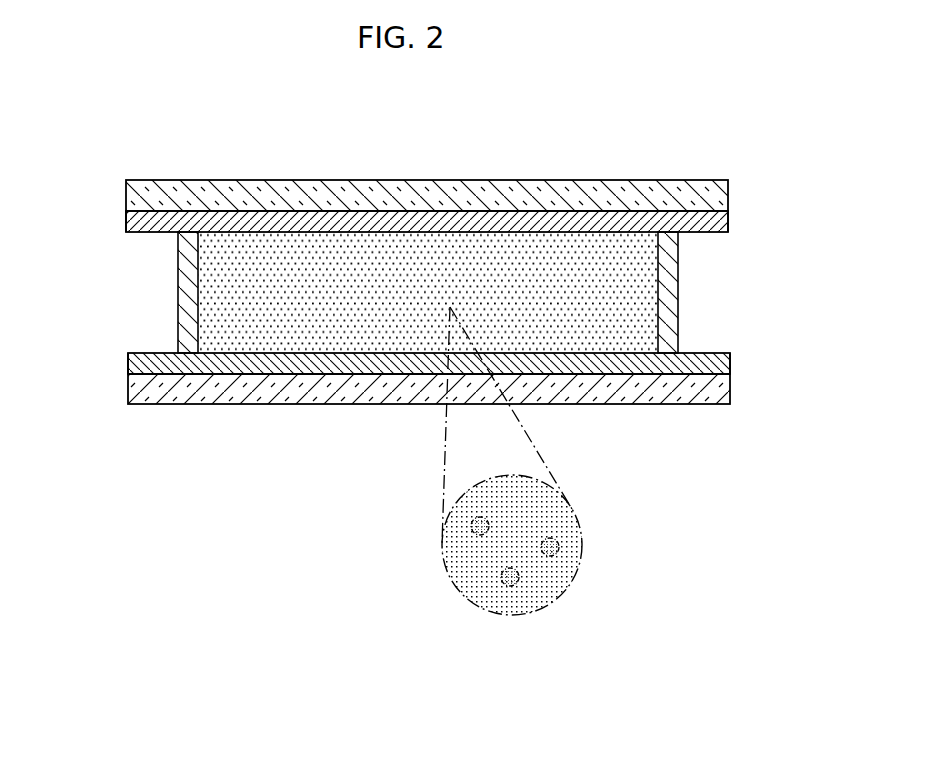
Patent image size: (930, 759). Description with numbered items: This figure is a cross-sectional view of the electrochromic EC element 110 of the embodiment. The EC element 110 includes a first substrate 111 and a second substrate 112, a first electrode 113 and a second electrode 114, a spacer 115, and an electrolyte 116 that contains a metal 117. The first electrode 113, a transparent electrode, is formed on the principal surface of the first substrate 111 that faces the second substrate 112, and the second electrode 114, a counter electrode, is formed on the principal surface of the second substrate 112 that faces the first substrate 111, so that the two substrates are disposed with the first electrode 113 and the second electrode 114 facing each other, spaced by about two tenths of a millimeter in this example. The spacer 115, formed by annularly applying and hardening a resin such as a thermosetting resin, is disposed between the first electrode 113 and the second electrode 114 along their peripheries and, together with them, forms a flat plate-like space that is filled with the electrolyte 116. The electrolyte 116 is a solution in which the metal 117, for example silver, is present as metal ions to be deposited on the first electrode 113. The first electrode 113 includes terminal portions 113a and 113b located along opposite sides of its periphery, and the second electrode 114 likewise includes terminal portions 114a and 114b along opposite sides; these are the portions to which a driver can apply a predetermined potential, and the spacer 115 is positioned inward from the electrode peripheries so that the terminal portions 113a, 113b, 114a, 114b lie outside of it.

The EC element 110 is at (784, 110).
The first substrate 111 is at (542, 196).
The second substrate 112 is at (710, 388).
The first electrode 113 is at (422, 220).
The terminal portion 113a is at (137, 224).
The terminal portion 113b is at (713, 224).
The second electrode 114 is at (605, 360).
The terminal portion 114a is at (147, 367).
The terminal portion 114b is at (713, 358).
The spacer 115 is at (187, 307).
The electrolyte 116 is at (392, 332).
The metal 117 is at (505, 577).